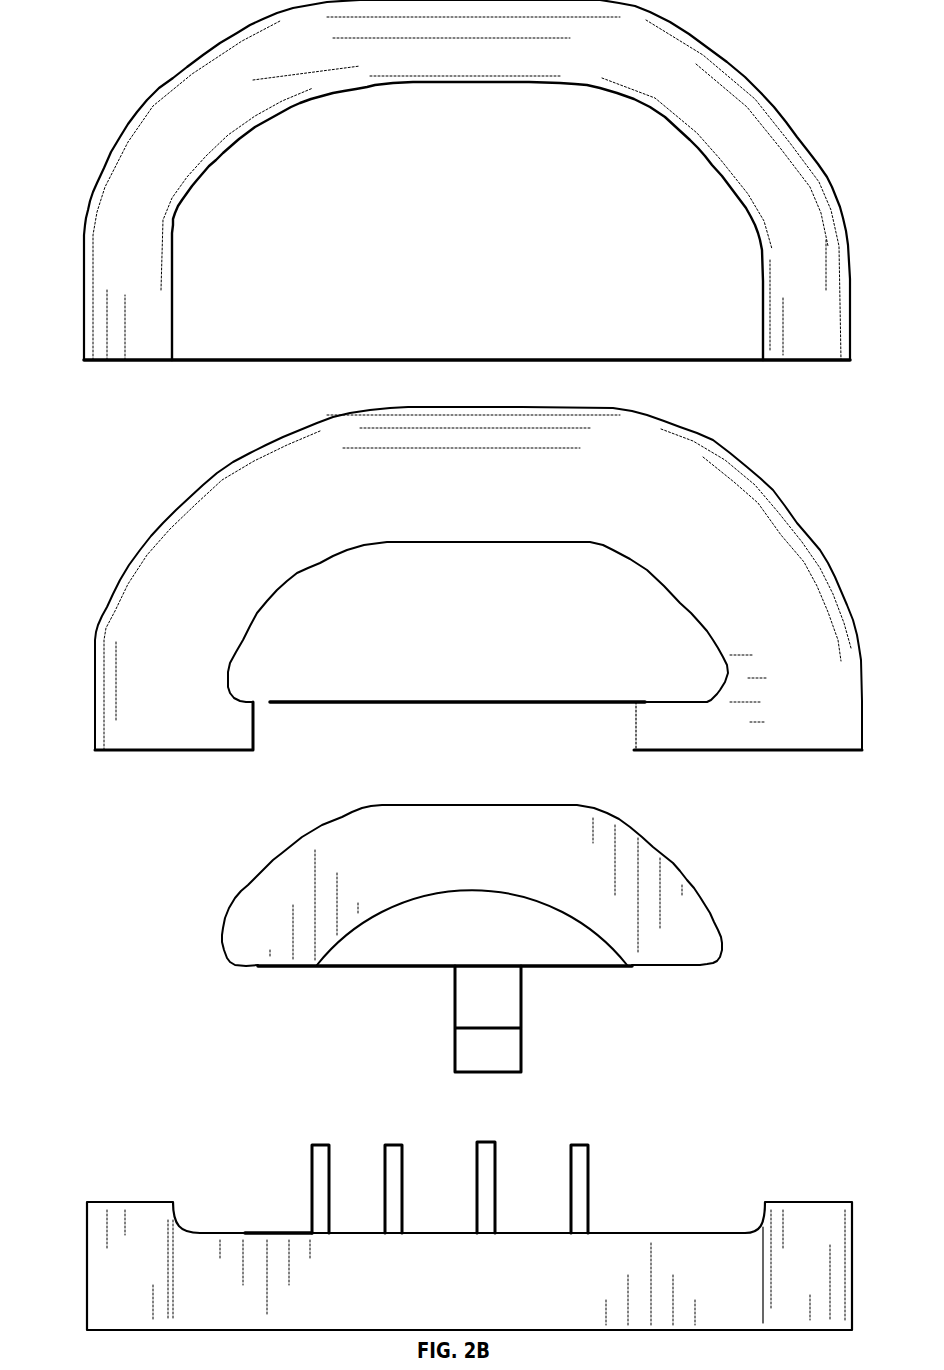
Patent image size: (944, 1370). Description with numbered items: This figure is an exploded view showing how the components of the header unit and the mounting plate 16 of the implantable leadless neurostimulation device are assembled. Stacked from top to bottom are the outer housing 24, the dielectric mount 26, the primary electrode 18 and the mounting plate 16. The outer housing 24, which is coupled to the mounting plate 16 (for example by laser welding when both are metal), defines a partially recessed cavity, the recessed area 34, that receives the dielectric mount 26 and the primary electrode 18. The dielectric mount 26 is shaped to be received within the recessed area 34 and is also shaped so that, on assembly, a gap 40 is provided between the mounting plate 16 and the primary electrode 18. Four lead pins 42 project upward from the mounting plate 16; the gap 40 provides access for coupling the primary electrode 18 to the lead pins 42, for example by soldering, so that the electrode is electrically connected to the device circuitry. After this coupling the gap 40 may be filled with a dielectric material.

The mounting plate 16 is at (115, 1273).
The primary electrode 18 is at (267, 897).
The outer housing 24 is at (115, 285).
The dielectric mount 26 is at (133, 608).
The recessed area 34 is at (411, 107).
The gap 40 is at (360, 746).
The lead pins 42 is at (488, 1187).